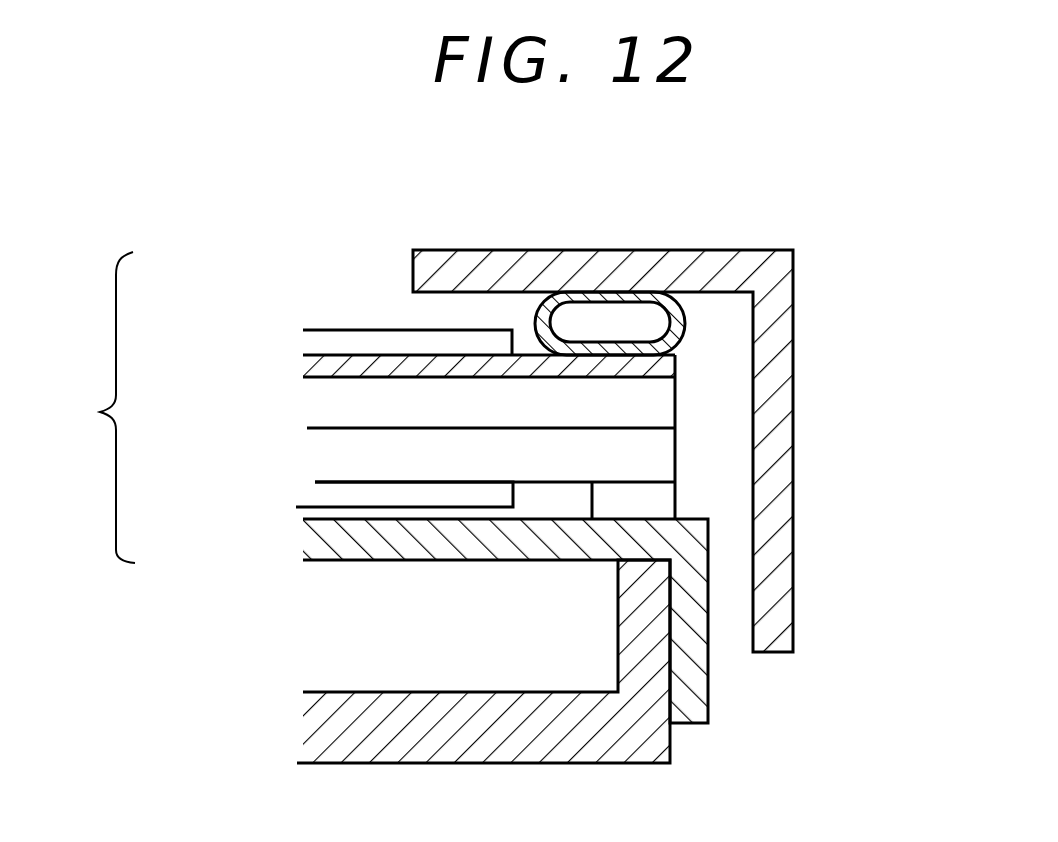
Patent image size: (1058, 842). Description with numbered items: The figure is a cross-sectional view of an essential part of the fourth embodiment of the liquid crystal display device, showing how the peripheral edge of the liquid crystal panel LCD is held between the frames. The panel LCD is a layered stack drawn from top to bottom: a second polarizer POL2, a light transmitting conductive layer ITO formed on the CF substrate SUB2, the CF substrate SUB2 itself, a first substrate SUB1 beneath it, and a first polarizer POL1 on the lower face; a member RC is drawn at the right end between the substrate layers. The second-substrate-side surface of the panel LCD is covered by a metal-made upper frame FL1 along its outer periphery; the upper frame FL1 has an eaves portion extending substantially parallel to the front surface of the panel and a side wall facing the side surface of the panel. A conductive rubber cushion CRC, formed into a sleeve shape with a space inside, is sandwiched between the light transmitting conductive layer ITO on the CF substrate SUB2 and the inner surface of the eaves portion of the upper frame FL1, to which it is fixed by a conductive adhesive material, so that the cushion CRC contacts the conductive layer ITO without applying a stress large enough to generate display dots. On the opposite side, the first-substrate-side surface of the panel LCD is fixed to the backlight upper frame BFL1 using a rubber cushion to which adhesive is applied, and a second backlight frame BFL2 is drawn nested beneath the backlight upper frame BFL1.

The upper frame FL1 is at (780, 363).
The conductive rubber cushion CRC is at (612, 298).
The second polarizer POL2 is at (317, 344).
The light transmitting conductive layer ITO is at (313, 366).
The CF substrate SUB2 is at (320, 403).
The first substrate SUB1 is at (327, 465).
The first polarizer POL1 is at (302, 495).
The resin / sealing member RC is at (670, 498).
The backlight upper frame BFL1 is at (703, 683).
The second back frame layer BFL2 is at (667, 745).
The liquid crystal panel LCD is at (78, 407).